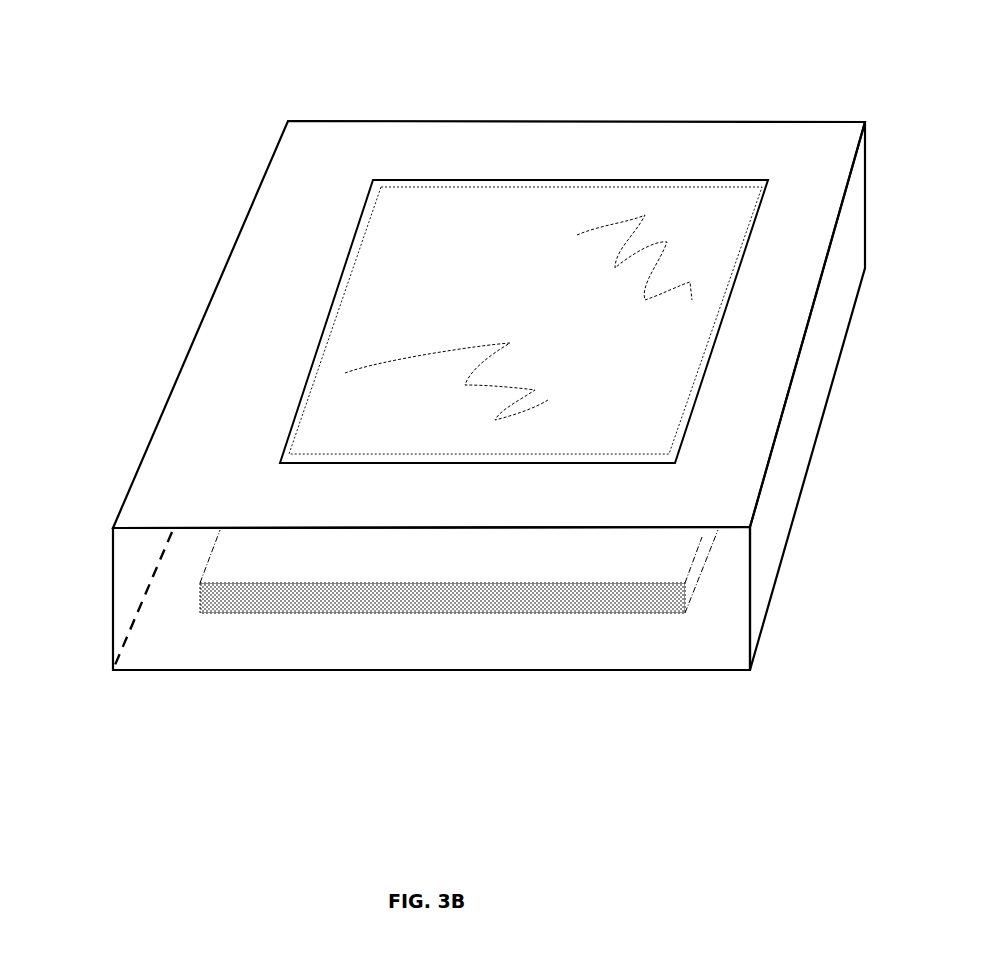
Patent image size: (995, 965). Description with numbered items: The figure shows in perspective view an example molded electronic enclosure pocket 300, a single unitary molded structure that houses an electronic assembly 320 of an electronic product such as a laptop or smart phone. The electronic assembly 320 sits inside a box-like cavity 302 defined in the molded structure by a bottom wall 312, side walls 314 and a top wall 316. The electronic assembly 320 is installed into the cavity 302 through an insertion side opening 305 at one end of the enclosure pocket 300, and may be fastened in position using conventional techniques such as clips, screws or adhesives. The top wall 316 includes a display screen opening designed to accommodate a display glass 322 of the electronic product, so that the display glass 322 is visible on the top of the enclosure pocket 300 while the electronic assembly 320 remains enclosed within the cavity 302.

The electronic enclosure pocket 300 is at (265, 165).
The box-like cavity 302 is at (185, 555).
The insertion side opening 305 is at (171, 648).
The bottom wall 312 is at (402, 672).
The right side 314 is at (778, 508).
The top wall 316 is at (330, 157).
The electronic assembly 320 is at (590, 598).
The display glass 322 is at (510, 220).